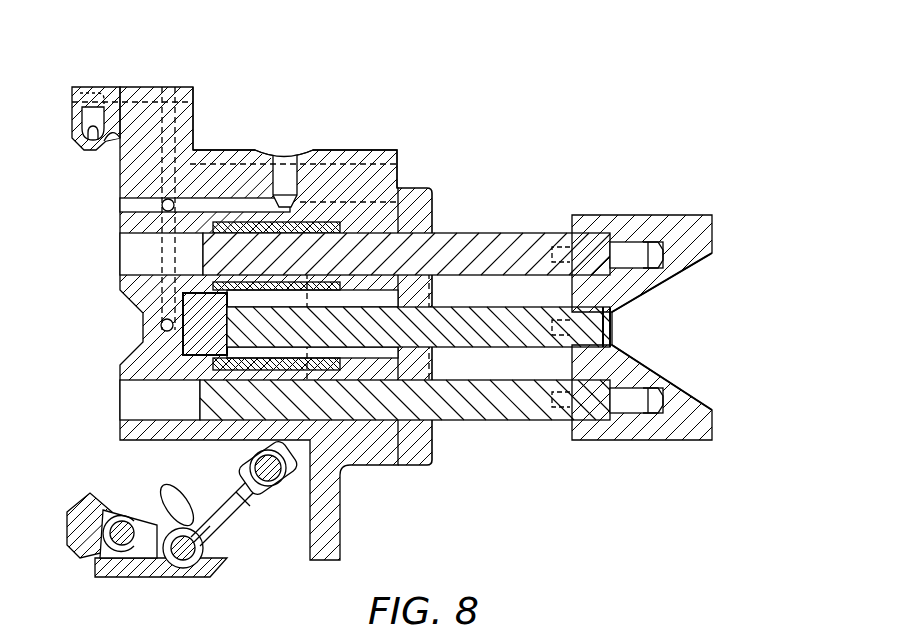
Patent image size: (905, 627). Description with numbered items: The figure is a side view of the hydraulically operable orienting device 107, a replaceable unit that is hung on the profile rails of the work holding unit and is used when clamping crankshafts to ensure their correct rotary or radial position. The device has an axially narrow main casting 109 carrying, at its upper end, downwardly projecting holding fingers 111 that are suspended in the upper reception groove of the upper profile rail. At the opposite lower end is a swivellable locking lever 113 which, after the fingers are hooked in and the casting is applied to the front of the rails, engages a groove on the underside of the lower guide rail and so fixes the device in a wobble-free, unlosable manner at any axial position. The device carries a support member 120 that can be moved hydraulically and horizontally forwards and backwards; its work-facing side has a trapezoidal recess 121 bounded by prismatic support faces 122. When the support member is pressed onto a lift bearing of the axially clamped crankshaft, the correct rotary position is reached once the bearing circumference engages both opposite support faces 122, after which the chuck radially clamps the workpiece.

The hydraulically operable orienting device 107 is at (318, 113).
The main casting 109 is at (233, 150).
The holding fingers 111 is at (106, 144).
The locking lever 113 is at (148, 503).
The support member 120 is at (642, 215).
The trapezoidal recess 121 is at (668, 336).
The prismatic support faces 122 is at (697, 266).